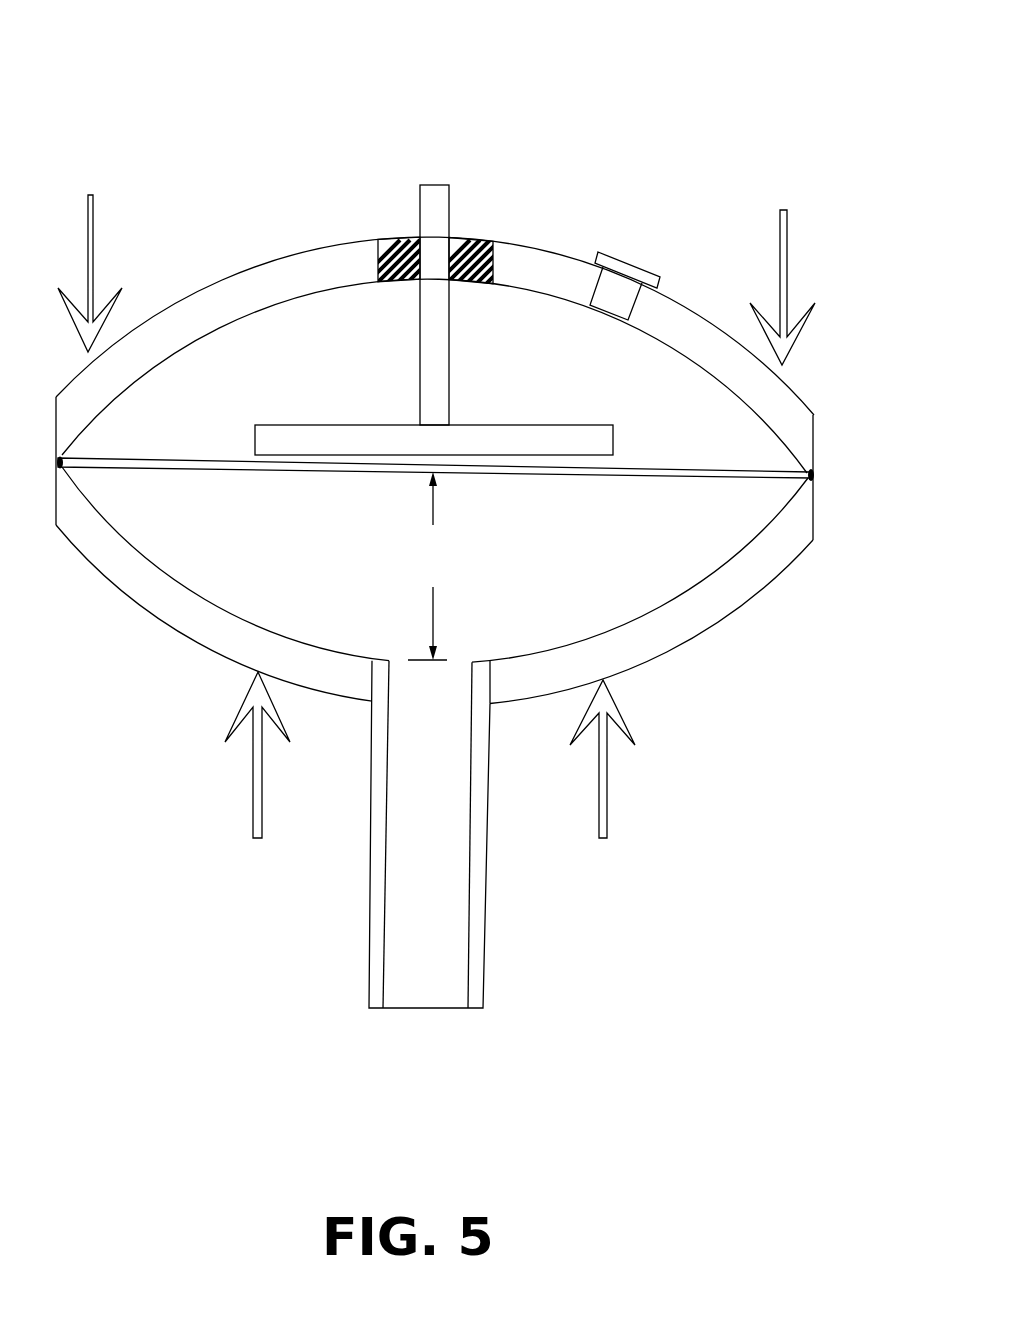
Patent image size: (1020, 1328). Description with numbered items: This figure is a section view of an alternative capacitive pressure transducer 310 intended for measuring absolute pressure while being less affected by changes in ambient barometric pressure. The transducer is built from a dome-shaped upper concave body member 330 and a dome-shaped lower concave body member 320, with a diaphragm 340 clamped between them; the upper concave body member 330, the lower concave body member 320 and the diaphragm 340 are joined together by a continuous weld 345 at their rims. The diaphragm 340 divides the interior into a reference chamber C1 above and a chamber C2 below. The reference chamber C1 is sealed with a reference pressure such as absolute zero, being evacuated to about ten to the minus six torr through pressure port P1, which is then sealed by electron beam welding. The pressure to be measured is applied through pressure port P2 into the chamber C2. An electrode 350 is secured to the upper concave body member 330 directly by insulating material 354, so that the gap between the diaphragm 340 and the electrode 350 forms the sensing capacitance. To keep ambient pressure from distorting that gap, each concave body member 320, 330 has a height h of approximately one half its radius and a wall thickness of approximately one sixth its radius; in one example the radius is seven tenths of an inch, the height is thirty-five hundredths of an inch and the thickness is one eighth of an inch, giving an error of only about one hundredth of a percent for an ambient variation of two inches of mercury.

The pressure transducer 310 is at (140, 48).
The lower concave body member 320 is at (737, 595).
The upper concave body member 330 is at (205, 293).
The diaphragm 340 is at (122, 460).
The continuous weld 345 is at (815, 475).
The electrode 350 is at (517, 443).
The insulating material 354 is at (472, 242).
The pressure port P1 is at (617, 293).
The pressure port P2 is at (427, 973).
The reference chamber C1 is at (434, 376).
The chamber C2 is at (435, 564).
The height h is at (427, 566).